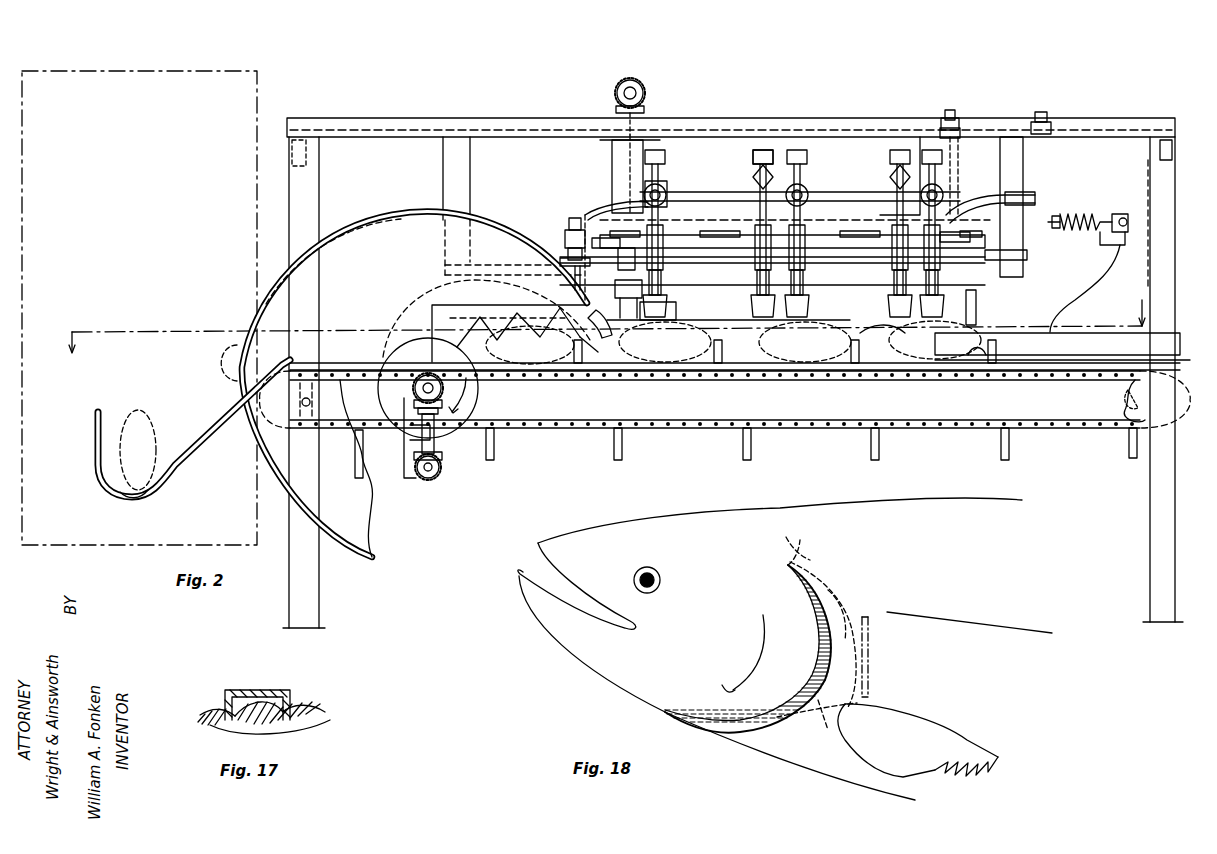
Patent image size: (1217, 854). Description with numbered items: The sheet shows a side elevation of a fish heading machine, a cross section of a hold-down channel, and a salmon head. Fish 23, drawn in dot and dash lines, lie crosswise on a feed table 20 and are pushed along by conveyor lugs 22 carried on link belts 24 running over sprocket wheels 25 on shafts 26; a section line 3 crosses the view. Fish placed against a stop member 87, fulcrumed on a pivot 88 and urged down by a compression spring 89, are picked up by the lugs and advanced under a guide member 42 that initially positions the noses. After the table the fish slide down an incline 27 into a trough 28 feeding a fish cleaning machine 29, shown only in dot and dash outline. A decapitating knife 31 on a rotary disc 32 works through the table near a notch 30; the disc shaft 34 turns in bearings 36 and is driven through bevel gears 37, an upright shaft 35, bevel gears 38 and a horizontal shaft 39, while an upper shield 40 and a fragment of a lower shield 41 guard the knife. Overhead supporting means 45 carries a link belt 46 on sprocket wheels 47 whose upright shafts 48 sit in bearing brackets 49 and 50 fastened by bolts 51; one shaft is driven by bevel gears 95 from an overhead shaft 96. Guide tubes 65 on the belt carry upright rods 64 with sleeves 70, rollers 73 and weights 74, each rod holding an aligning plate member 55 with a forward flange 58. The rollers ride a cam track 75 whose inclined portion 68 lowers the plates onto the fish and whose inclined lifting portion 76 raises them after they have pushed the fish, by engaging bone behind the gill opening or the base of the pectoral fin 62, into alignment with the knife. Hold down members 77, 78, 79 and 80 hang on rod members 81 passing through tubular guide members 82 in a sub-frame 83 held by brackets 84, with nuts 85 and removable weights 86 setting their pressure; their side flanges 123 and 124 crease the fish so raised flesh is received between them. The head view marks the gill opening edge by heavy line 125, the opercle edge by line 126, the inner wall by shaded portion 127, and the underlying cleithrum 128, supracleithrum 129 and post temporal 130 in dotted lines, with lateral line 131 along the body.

In FIG. 2, the section line 3- 3 is at (607, 326).
In FIG. 2, the feed table 20 is at (882, 371).
In FIG. 2, the conveyor lugs 22 is at (868, 420).
In FIG. 2, the fish 23 is at (137, 410).
In FIG. 2, the link belts 24 is at (1068, 372).
In FIG. 2, the sprocket wheels 25 is at (1130, 388).
In FIG. 2, the shafts 26 is at (1132, 422).
In FIG. 2, the incline 27 is at (205, 420).
In FIG. 2, the trough 28 is at (130, 497).
In FIG. 2, the fish cleaning machine 29 is at (172, 80).
In FIG. 2, the notch 30 is at (508, 372).
In FIG. 2, the decapitating knife 31 is at (526, 315).
In FIG. 2, the rotary disc 32 is at (468, 410).
In FIG. 2, the shaft 34 is at (426, 374).
In FIG. 2, the upright shaft 35 is at (438, 438).
In FIG. 2, the bearings 36 is at (404, 452).
In FIG. 2, the bevel gears 37 is at (414, 396).
In FIG. 2, the bevel gears 38 is at (416, 472).
In FIG. 2, the horizontal shaft 39 is at (432, 479).
In FIG. 2, the shield 40 is at (378, 216).
In FIG. 2, the shield 41 is at (372, 535).
In FIG. 2, the guide member 42 is at (1000, 336).
In FIG. 2, the overhead supporting means 45 is at (360, 130).
In FIG. 2, the link belt 46 is at (850, 236).
In FIG. 2, the sprocket wheels 47 is at (612, 250).
In FIG. 2, the upright shafts 48 is at (618, 168).
In FIG. 2, the bearing bracket 49 is at (950, 140).
In FIG. 2, the bearing bracket 50 is at (612, 150).
In FIG. 2, the bolts 51 is at (960, 112).
In FIG. 2, the upright plate member 55 is at (666, 295).
In FIG. 18, the upright plate member 55 is at (870, 668).
In FIG. 2, the plate like flange 58 is at (668, 308).
In FIG. 18, the gill or pectoral fin 62 is at (930, 724).
In FIG. 2, the upright rod 64 is at (752, 152).
In FIG. 2, the guide tube 65 is at (690, 259).
In FIG. 2, the inclined portion 68 is at (962, 200).
In FIG. 2, the sleeve 70 is at (752, 180).
In FIG. 2, the roller 73 is at (810, 195).
In FIG. 2, the weights 74 is at (812, 168).
In FIG. 2, the cam track 75 is at (800, 206).
In FIG. 2, the inclined lifting portion 76 is at (612, 200).
In FIG. 2, the hold down member 77 is at (882, 335).
In FIG. 17, the hold down member 77 is at (258, 690).
In FIG. 2, the hold down member 78 is at (735, 320).
In FIG. 2, the hold down member 79 is at (601, 310).
In FIG. 2, the hold down member 80 is at (594, 346).
In FIG. 2, the rod members 81 is at (586, 232).
In FIG. 2, the tubular guide members 82 is at (560, 260).
In FIG. 2, the sub-frame 83 is at (858, 265).
In FIG. 2, the brackets 84 is at (470, 172).
In FIG. 2, the nuts 85 is at (565, 243).
In FIG. 2, the removable weights 86 is at (568, 226).
In FIG. 2, the stop member 87 is at (1086, 320).
In FIG. 2, the pivot 88 is at (1120, 242).
In FIG. 2, the compression spring 89 is at (1078, 213).
In FIG. 2, the bevel gears 95 is at (646, 98).
In FIG. 2, the overhead shaft 96 is at (638, 86).
In FIG. 17, the side flange 123 is at (224, 700).
In FIG. 17, the side flange 124 is at (292, 706).
In FIG. 18, the heavy line 125 is at (748, 732).
In FIG. 18, the line 126 is at (805, 676).
In FIG. 18, the shaded portion 127 is at (778, 708).
In FIG. 18, the cleithrum 128 is at (817, 726).
In FIG. 18, the supracleithrum 129 is at (850, 590).
In FIG. 18, the post temporal 130 is at (800, 545).
In FIG. 18, the lateral line 131 is at (985, 622).